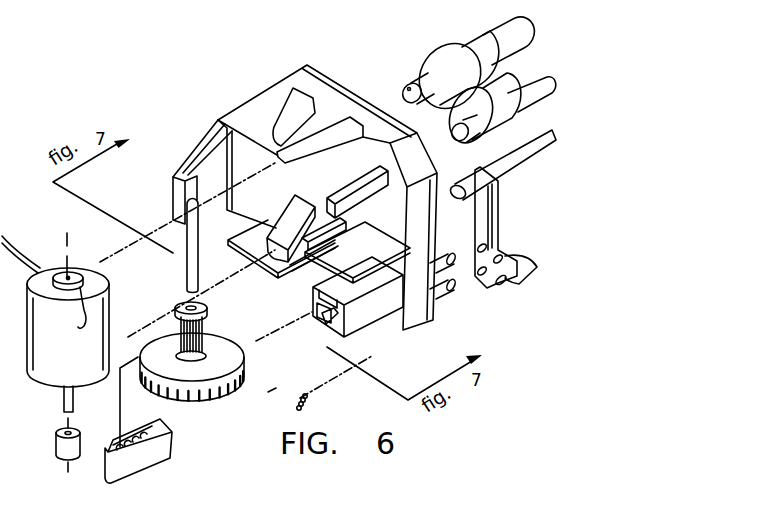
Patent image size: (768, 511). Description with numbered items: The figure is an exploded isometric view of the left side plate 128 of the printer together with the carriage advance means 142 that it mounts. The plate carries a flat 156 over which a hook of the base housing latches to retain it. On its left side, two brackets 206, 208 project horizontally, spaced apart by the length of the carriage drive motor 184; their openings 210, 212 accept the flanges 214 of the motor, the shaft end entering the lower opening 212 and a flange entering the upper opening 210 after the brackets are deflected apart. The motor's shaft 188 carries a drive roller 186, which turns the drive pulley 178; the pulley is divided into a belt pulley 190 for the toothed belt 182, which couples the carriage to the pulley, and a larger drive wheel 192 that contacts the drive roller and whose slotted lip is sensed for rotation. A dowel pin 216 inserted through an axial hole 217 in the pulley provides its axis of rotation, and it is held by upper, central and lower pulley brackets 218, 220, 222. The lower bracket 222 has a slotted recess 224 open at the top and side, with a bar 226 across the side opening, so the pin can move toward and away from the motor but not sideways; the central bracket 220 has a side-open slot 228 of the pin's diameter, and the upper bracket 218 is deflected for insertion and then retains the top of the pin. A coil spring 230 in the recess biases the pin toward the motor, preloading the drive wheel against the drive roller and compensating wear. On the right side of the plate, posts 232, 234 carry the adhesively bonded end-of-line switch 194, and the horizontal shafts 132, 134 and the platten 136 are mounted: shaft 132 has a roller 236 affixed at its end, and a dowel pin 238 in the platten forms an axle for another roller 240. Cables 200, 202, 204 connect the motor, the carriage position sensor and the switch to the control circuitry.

The left side plate 128 is at (260, 93).
The platten 136 is at (478, 35).
The roller 240 is at (410, 82).
The dowel pin 238 is at (408, 89).
The shaft 132 is at (547, 95).
The roller 236 is at (474, 141).
The shaft 134 is at (513, 170).
The flat 156 is at (186, 172).
The bracket 206 is at (322, 152).
The opening 210 is at (279, 156).
The upper pulley bracket 218 is at (330, 198).
The bracket 208 is at (262, 233).
The opening 212 is at (258, 258).
The central pulley bracket 220 is at (307, 268).
The slot 228 is at (340, 242).
The lower pulley bracket 222 is at (383, 317).
The bar 226 is at (318, 298).
The slotted recess 224 is at (325, 323).
The post 232 is at (441, 262).
The post 234 is at (441, 304).
The cable 204 is at (558, 231).
The end-of-line switch 194 is at (488, 284).
The dowel pin 216 is at (186, 275).
The axial hole 217 is at (178, 306).
The drive pulley 178 is at (252, 322).
The belt pulley 190 is at (216, 356).
The drive wheel 192 is at (215, 400).
The carriage advance means 142 is at (272, 390).
The coil spring 230 is at (304, 409).
The cable 200 is at (27, 214).
The carriage drive motor 184 is at (72, 277).
The flange 214 is at (66, 314).
The cable 202 is at (54, 327).
The shaft 188 is at (62, 403).
The drive roller 186 is at (56, 444).
The toothed belt 182 is at (165, 460).